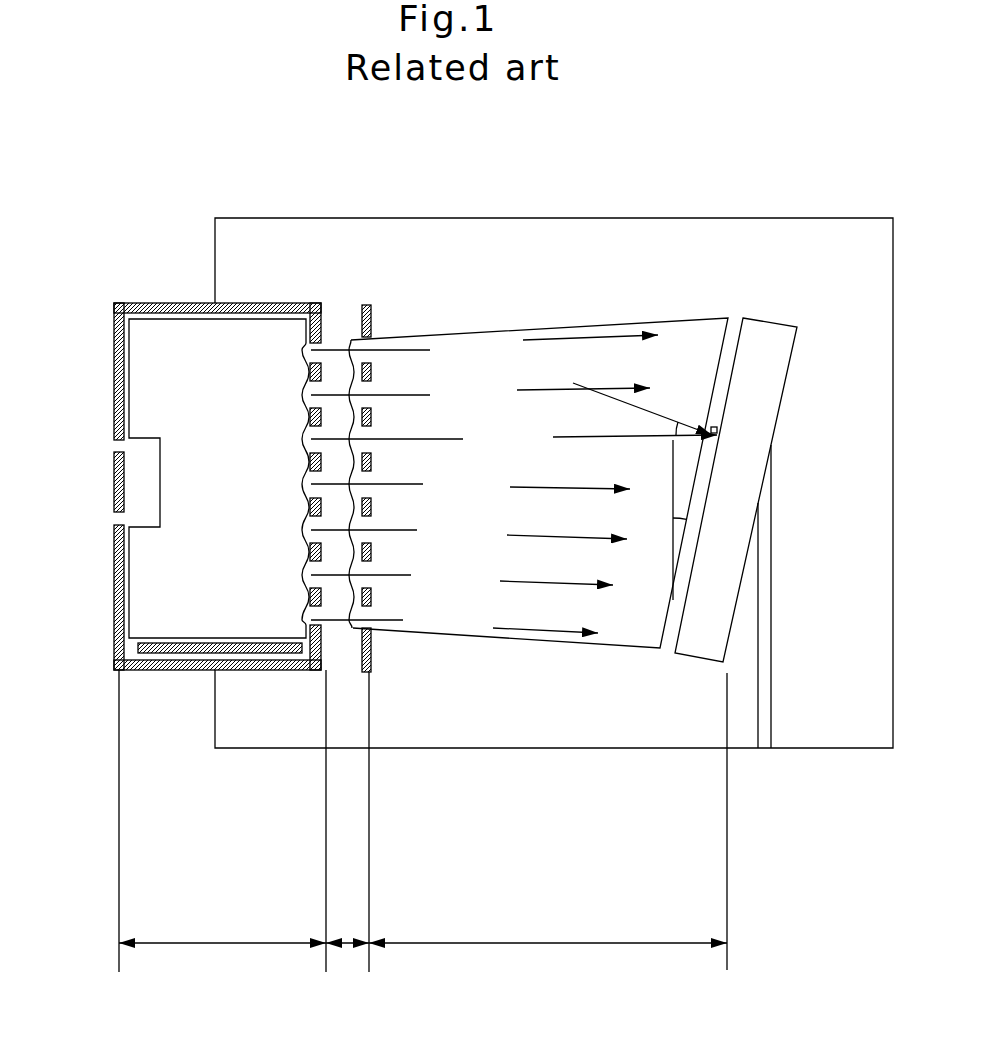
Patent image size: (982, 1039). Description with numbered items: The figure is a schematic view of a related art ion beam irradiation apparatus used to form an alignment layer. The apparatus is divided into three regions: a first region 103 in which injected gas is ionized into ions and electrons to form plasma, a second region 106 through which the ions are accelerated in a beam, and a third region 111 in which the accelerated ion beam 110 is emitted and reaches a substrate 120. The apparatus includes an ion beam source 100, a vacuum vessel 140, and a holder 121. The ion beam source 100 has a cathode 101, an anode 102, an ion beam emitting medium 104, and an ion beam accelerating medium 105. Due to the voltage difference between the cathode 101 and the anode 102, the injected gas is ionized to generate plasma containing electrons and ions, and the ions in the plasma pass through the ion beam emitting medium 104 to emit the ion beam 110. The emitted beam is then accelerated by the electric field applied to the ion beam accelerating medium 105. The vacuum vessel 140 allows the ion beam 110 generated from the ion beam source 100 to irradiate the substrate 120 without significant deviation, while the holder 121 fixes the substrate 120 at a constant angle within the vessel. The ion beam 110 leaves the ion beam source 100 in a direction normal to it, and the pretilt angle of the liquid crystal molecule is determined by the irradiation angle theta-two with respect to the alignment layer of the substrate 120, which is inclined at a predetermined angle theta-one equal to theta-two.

The ion beam source 100 is at (133, 303).
The cathode 101 is at (115, 468).
The anode 102 is at (181, 650).
The first region 103 is at (222, 824).
The ion beam emitting medium 104 is at (308, 376).
The ion beam accelerating medium 105 is at (372, 312).
The second region 106 is at (351, 842).
The ion beam 110 is at (507, 350).
The third region 111 is at (548, 827).
The substrate 120 is at (767, 335).
The holder 121 is at (768, 688).
The vacuum vessel 140 is at (528, 750).